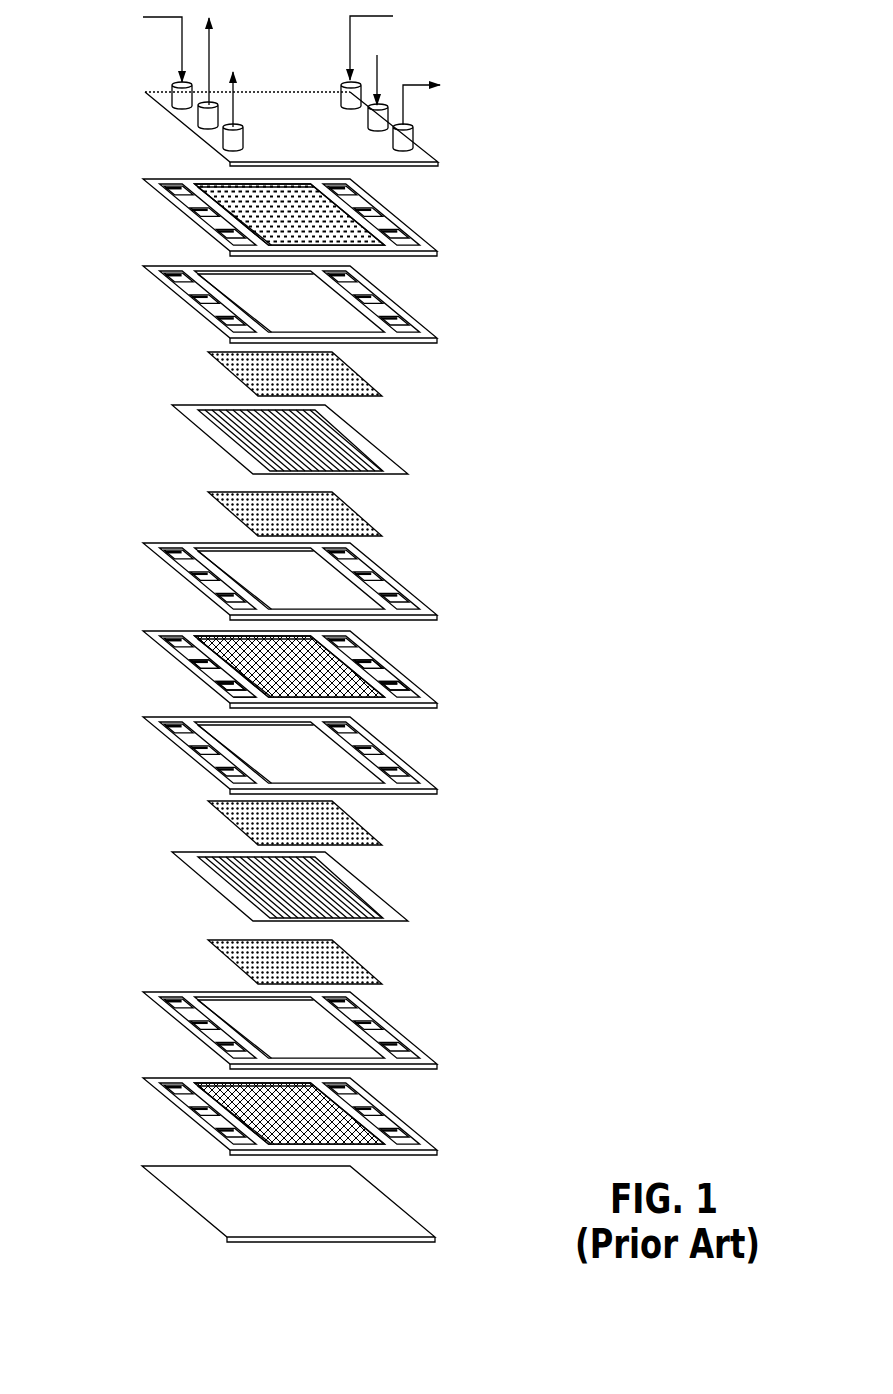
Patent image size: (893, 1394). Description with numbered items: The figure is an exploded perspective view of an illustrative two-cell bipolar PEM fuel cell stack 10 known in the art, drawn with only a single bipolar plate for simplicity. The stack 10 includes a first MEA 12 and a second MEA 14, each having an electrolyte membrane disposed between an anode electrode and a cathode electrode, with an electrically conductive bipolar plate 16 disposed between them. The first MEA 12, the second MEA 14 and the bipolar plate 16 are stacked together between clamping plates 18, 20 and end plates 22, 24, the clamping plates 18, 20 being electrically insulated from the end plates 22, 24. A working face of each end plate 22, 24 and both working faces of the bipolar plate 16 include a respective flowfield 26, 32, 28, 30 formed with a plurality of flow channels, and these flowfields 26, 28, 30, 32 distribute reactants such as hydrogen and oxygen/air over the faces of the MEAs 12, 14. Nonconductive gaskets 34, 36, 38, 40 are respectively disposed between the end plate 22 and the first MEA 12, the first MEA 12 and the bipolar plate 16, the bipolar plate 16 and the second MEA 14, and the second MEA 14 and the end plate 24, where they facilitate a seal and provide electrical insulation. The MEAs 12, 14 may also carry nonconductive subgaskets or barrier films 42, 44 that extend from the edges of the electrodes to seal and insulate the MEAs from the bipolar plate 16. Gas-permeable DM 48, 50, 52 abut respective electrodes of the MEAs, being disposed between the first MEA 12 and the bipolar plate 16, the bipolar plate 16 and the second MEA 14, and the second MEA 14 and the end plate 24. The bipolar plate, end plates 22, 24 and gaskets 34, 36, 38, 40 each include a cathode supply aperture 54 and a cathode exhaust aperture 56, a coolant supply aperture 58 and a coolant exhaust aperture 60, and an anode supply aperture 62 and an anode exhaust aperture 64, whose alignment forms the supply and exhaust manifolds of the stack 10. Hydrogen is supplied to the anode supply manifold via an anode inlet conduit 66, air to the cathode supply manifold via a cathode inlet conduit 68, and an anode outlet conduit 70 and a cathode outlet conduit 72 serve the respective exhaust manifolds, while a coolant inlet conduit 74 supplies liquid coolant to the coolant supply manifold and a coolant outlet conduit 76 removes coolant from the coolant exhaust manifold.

The fuel cell stack 10 is at (337, 622).
The first MEA 12 is at (225, 434).
The second MEA 14 is at (293, 886).
The bipolar plate 16 is at (293, 664).
The clamping plate 18 is at (293, 87).
The clamping plate 20 is at (410, 1209).
The end plate 22 is at (239, 223).
The end plate 24 is at (343, 1116).
The flowfield 26 is at (192, 225).
The flowfield 28 is at (293, 680).
The flowfield 30 is at (210, 688).
The flowfield 32 is at (363, 1132).
The nonconductive gasket 34 is at (192, 274).
The nonconductive gasket 36 is at (185, 579).
The nonconductive gasket 38 is at (388, 755).
The nonconductive gasket 40 is at (237, 377).
The subgasket 42 is at (230, 412).
The subgasket 44 is at (230, 880).
The DM 48 is at (230, 512).
The DM 50 is at (360, 812).
The DM 52 is at (357, 955).
The cathode supply aperture 54 is at (293, 664).
The cathode exhaust aperture 56 is at (417, 680).
The coolant supply aperture 58 is at (398, 655).
The coolant exhaust aperture 60 is at (203, 658).
The anode supply aperture 62 is at (345, 633).
The anode exhaust aperture 64 is at (217, 693).
The anode inlet conduit 66 is at (343, 96).
The cathode inlet conduit 68 is at (177, 90).
The anode outlet conduit 70 is at (227, 133).
The cathode outlet conduit 72 is at (410, 142).
The coolant inlet conduit 74 is at (387, 113).
The coolant outlet conduit 76 is at (198, 118).